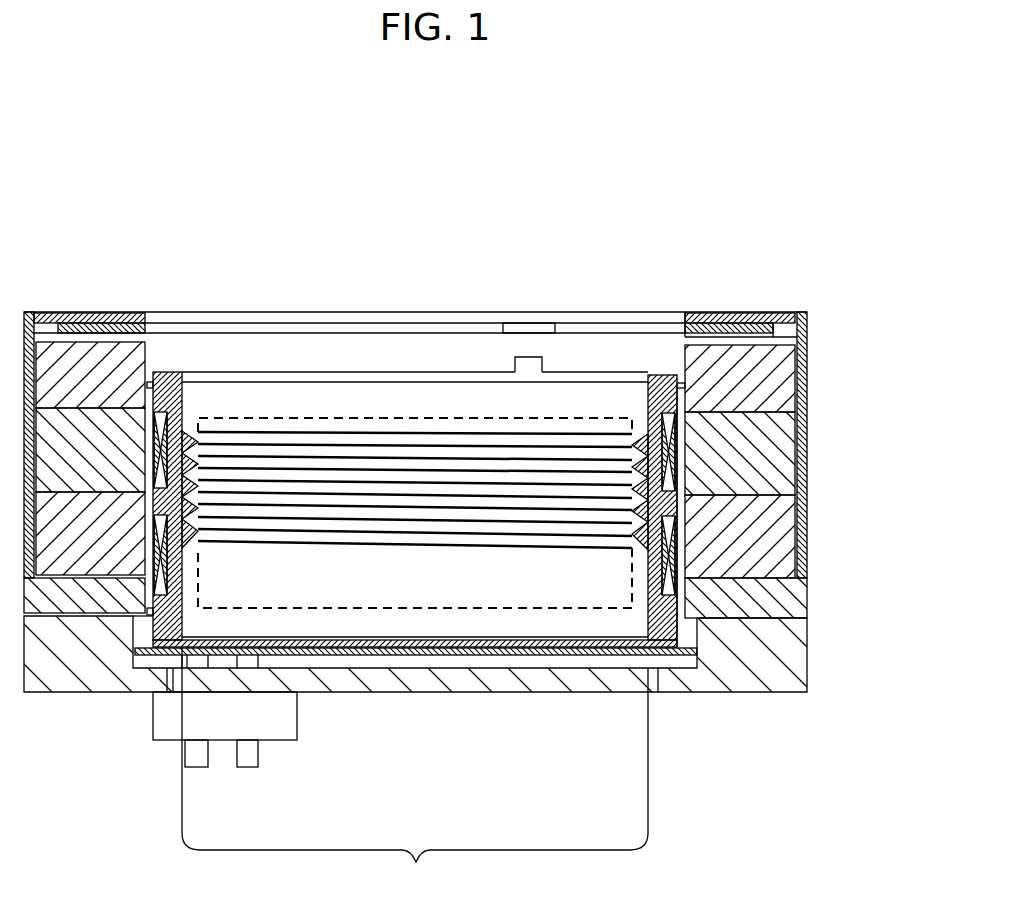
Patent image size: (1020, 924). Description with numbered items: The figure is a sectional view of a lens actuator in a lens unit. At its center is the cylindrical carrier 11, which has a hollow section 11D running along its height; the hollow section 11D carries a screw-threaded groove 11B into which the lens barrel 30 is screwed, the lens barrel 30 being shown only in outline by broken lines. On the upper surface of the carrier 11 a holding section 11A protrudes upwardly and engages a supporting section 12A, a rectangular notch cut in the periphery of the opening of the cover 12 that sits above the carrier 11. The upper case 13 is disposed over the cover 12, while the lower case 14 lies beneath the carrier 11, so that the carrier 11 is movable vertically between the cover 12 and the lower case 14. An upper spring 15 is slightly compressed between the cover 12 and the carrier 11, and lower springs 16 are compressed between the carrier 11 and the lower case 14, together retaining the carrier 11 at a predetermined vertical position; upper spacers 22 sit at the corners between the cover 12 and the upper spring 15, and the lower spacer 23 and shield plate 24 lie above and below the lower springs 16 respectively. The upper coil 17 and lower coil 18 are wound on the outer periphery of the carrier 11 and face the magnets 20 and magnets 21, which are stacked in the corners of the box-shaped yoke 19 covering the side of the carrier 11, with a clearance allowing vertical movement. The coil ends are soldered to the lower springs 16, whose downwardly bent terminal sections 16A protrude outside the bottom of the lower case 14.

The carrier 11 is at (534, 437).
The holding section 11A is at (530, 370).
The screw-threaded groove 11B is at (325, 465).
The hollow section 11D is at (415, 774).
The cover 12 is at (763, 318).
The supporting section 12A is at (543, 330).
The upper case 13 is at (716, 316).
The lower case 14 is at (788, 662).
The upper spring 15 is at (166, 378).
The lower spring 16 is at (697, 647).
The terminal section 16A is at (250, 755).
The upper coil 17 is at (670, 423).
The lower coil 18 is at (670, 582).
The yoke 19 is at (808, 329).
The magnet 20 is at (775, 470).
The magnet 21 is at (787, 523).
The upper spacer 22 is at (787, 378).
The lower spacer 23 is at (792, 610).
The shield plate 24 is at (657, 657).
The lens barrel 30 is at (247, 412).